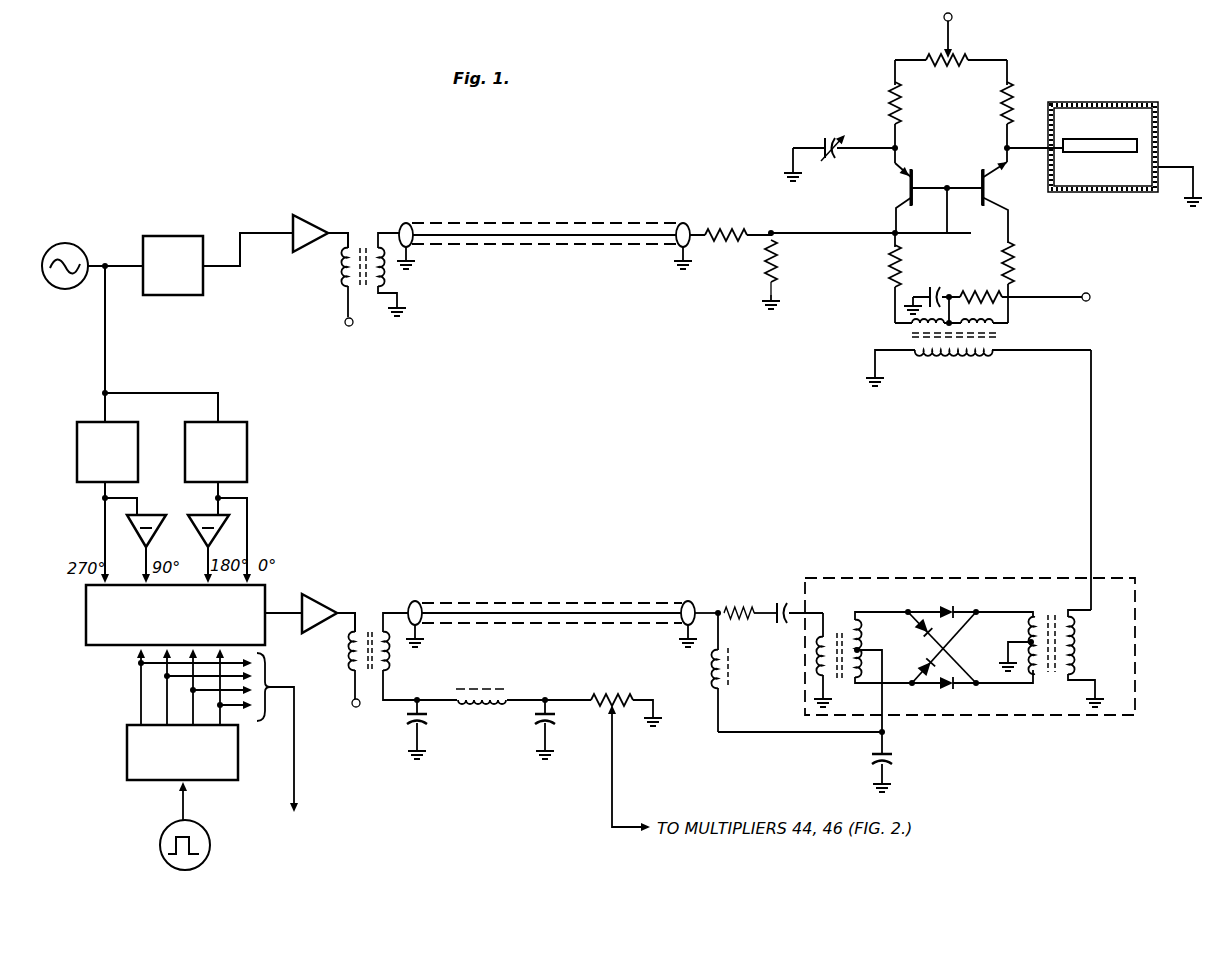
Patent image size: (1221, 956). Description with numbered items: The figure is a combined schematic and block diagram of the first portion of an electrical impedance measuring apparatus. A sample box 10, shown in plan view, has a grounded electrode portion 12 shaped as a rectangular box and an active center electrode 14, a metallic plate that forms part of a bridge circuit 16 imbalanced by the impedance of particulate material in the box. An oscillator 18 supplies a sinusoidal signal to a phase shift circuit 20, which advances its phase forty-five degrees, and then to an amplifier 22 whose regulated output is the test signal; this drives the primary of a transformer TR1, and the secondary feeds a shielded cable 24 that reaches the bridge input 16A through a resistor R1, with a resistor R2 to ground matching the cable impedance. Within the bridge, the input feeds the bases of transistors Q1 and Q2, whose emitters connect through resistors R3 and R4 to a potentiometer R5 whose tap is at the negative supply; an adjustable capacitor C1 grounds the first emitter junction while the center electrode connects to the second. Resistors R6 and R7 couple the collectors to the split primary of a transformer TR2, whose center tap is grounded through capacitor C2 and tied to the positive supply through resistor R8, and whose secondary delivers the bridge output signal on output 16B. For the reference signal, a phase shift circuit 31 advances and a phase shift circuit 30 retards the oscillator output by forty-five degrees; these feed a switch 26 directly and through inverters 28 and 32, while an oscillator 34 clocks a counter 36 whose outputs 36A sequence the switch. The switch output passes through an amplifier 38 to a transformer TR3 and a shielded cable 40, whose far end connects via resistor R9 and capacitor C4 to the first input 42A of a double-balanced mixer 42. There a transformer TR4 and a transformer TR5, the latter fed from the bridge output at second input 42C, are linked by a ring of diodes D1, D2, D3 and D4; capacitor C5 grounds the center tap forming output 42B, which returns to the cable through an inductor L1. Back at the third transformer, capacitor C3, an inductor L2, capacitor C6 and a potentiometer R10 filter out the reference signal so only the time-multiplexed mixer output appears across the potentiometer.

The sample box 10 is at (1104, 136).
The grounded electrode portion 12 is at (1159, 126).
The active center electrode 14 is at (1117, 152).
The bridge circuit 16 is at (958, 197).
The input 16A is at (817, 233).
The output 16B is at (1093, 501).
The oscillator 18 is at (66, 243).
The phase shift circuit 20 is at (166, 236).
The amplifier 22 is at (313, 216).
The shielded cable 24 is at (493, 223).
The switch 26 is at (86, 625).
The inverter 28 is at (204, 515).
The phase shift circuit 30 is at (77, 445).
The phase shift circuit 31 is at (185, 455).
The inverter 32 is at (147, 515).
The oscillator 34 is at (160, 838).
The counter 36 is at (127, 751).
The outputs 36A is at (137, 689).
The amplifier 38 is at (315, 596).
The shielded cable 40 is at (526, 603).
The double-balanced mixer 42 is at (992, 640).
The first input 42A is at (798, 608).
The output 42B is at (782, 733).
The second input 42C is at (1093, 597).
The resistor R1 is at (726, 222).
The resistor R2 is at (784, 274).
The resistor R3 is at (907, 103).
The resistor R4 is at (993, 103).
The potentiometer R5 is at (947, 71).
The resistor R6 is at (881, 278).
The resistor R7 is at (1022, 282).
The resistor R8 is at (978, 288).
The resistor R9 is at (750, 601).
The potentiometer R10 is at (626, 753).
The adjustable capacitor C1 is at (839, 147).
The capacitor C2 is at (926, 291).
The capacitor C3 is at (431, 729).
The capacitor C4 is at (795, 625).
The capacitor C5 is at (897, 762).
The capacitor C6 is at (559, 729).
The inductor L1 is at (709, 672).
The inductor L2 is at (482, 686).
The diode D1 is at (942, 601).
The diode D2 is at (935, 647).
The diode D3 is at (944, 694).
The diode D4 is at (935, 647).
The transistor Q1 is at (915, 192).
The transistor Q2 is at (987, 197).
The transformer TR1 is at (364, 236).
The transformer TR2 is at (900, 339).
The transformer TR3 is at (372, 616).
The transformer TR4 is at (840, 610).
The transformer TR5 is at (1052, 689).